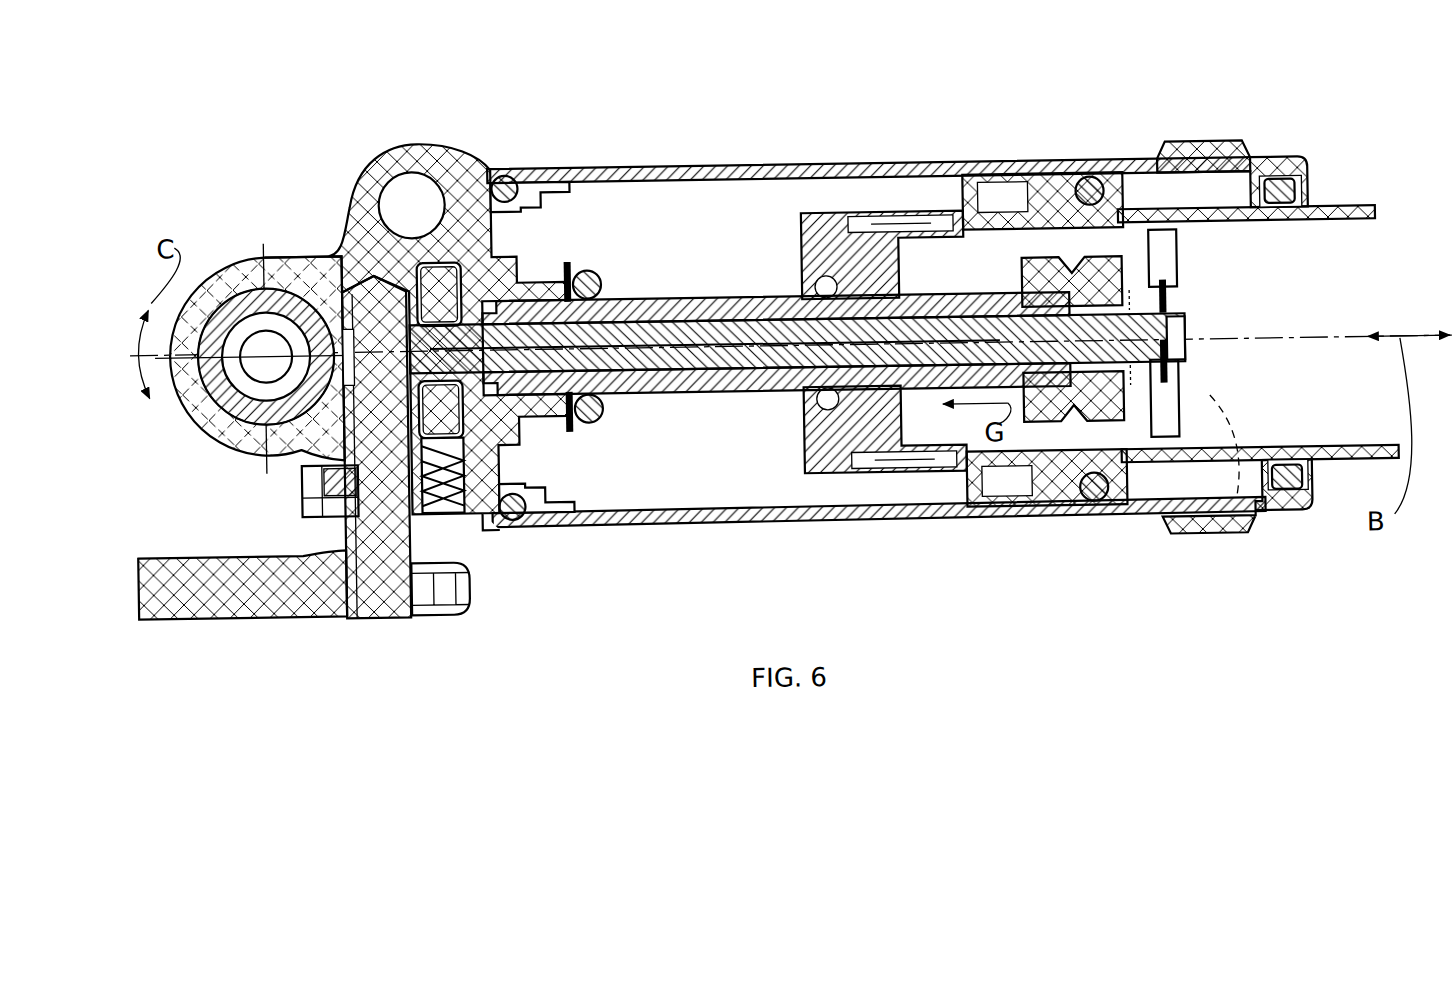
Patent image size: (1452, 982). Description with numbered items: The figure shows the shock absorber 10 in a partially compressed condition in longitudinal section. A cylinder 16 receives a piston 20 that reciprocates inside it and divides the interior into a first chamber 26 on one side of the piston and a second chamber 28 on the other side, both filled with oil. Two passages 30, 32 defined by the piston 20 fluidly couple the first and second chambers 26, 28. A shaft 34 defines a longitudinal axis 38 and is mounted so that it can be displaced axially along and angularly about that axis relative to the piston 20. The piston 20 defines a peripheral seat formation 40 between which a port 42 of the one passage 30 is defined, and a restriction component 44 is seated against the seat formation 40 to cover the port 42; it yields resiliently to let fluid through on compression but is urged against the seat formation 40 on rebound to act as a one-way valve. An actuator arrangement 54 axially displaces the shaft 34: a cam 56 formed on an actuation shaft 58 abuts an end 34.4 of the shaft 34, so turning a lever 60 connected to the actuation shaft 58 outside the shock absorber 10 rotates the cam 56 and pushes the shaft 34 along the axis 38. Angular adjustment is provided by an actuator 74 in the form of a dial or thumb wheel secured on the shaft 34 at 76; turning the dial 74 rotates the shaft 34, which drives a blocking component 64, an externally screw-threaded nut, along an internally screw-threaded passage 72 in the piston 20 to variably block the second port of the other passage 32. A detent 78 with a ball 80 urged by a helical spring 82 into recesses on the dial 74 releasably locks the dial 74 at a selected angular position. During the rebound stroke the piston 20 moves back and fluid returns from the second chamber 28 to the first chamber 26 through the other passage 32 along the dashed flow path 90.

The shock absorber 10 is at (851, 100).
The cylinder 16 is at (1353, 222).
The piston 20 is at (1048, 277).
The first chamber 26 is at (1303, 262).
The second chamber 28 is at (962, 276).
The passage 30 is at (1132, 278).
The passage 32 is at (1108, 381).
The shaft 34 is at (745, 360).
The end of the shaft 34.4 is at (403, 344).
The longitudinal axis 38 is at (668, 398).
The seat formation 40 is at (1108, 410).
The port 42 is at (1180, 323).
The restriction component 44 is at (1177, 313).
The actuator arrangement 54 is at (540, 590).
The cam 56 is at (342, 345).
The actuation shaft 58 is at (432, 580).
The lever 60 is at (237, 616).
The blocking component 64 is at (1092, 368).
The internally screw-threaded passage 72 is at (1045, 340).
The actuator 74 is at (443, 288).
The securing location of the dial 76 is at (495, 260).
The detent 78 is at (450, 516).
The ball 80 is at (500, 479).
The helical spring 82 is at (500, 449).
The flow path 90 is at (1237, 546).